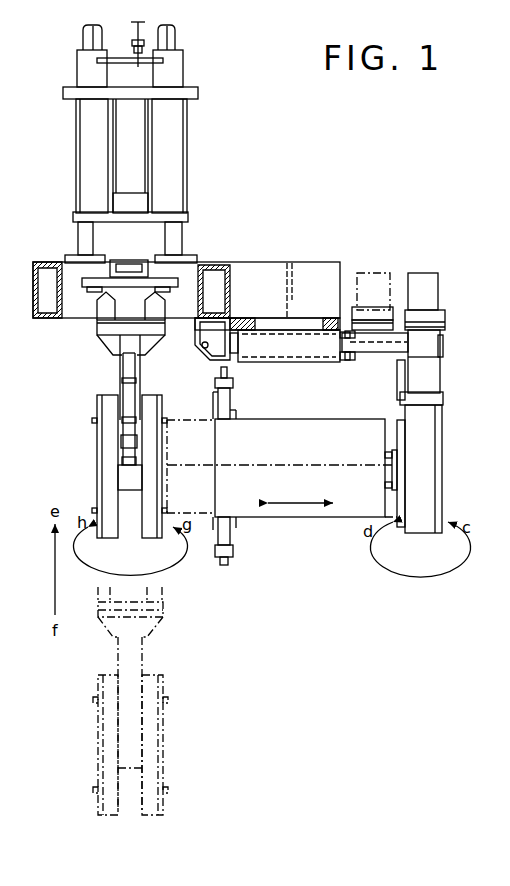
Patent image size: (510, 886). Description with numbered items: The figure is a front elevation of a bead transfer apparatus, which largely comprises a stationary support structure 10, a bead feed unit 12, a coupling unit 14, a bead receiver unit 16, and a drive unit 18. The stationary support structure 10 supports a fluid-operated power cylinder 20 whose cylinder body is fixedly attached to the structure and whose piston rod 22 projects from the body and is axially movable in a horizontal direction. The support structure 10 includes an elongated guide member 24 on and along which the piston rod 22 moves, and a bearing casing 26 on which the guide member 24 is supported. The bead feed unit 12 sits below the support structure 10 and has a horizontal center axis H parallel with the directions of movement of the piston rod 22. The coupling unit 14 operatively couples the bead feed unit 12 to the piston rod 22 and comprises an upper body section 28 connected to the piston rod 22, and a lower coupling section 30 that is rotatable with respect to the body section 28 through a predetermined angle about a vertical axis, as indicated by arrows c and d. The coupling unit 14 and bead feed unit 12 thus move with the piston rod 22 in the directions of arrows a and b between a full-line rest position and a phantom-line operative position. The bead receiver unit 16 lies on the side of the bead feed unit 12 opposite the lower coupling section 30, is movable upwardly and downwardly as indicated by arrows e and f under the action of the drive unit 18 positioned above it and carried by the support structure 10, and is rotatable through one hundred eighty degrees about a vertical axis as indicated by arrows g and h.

The stationary support structure 10 is at (294, 262).
The bead feed unit 12 is at (337, 520).
The coupling unit 14 is at (423, 266).
The bead receiver unit 16 is at (94, 452).
The drive unit 18 is at (202, 159).
The fluid-operated power cylinder 20 is at (308, 361).
The piston rod 22 is at (370, 352).
The elongated guide member 24 is at (383, 354).
The bearing casing 26 is at (262, 363).
The upper body section 28 is at (440, 365).
The lower coupling section 30 is at (441, 455).